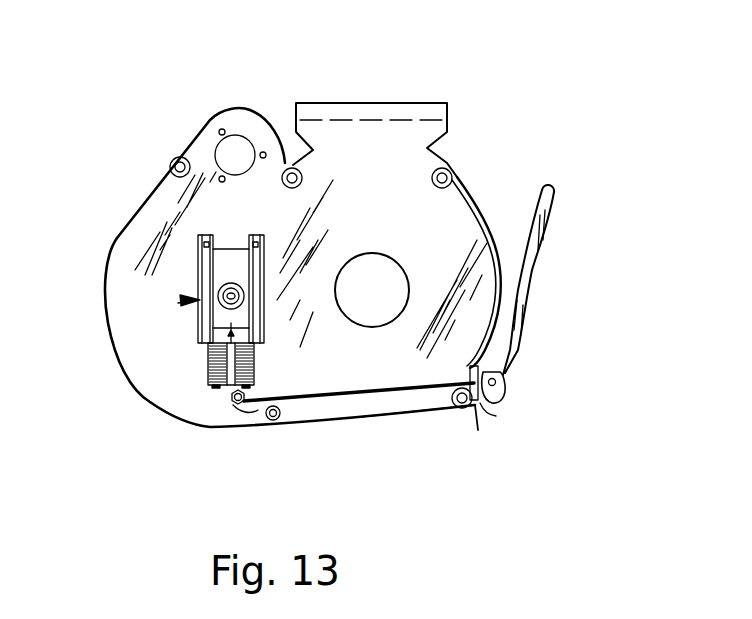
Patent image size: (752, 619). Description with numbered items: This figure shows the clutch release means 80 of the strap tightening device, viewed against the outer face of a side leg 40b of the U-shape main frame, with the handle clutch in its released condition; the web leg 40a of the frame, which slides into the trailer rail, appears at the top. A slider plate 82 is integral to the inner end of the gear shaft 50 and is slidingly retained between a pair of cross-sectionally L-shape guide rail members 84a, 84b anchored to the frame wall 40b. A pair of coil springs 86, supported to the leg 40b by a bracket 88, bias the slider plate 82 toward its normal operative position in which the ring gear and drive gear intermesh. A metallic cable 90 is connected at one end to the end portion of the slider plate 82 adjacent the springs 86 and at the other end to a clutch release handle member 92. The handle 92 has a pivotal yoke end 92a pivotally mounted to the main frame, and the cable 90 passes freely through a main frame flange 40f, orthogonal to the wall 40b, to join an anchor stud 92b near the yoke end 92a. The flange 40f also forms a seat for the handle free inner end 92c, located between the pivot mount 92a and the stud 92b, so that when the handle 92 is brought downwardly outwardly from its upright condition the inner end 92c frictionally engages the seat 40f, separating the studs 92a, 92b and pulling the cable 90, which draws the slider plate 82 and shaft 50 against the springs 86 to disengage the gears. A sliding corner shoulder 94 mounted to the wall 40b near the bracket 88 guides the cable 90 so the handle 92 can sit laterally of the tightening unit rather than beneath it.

The web leg 40a is at (363, 117).
The side leg 40b is at (207, 410).
The main frame flange 40f is at (478, 430).
The gear shaft 50 is at (228, 312).
The clutch release means 80 is at (178, 303).
The slider plate 82 is at (200, 271).
The guide rail member 84a is at (198, 258).
The guide rail member 84b is at (280, 320).
The coil springs 86 is at (225, 394).
The bracket 88 is at (318, 402).
The metallic cable 90 is at (388, 388).
The clutch release handle member 92 is at (532, 272).
The pivotal yoke end 92a is at (500, 392).
The anchor stud 92b is at (497, 380).
The handle free inner end 92c is at (503, 410).
The sliding corner shoulder 94 is at (248, 406).